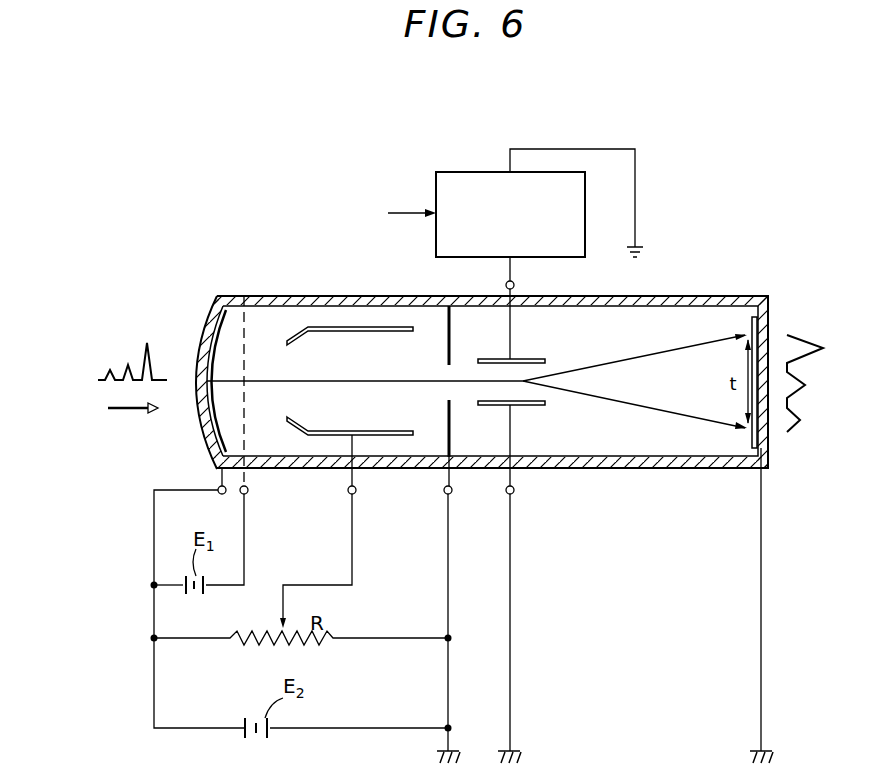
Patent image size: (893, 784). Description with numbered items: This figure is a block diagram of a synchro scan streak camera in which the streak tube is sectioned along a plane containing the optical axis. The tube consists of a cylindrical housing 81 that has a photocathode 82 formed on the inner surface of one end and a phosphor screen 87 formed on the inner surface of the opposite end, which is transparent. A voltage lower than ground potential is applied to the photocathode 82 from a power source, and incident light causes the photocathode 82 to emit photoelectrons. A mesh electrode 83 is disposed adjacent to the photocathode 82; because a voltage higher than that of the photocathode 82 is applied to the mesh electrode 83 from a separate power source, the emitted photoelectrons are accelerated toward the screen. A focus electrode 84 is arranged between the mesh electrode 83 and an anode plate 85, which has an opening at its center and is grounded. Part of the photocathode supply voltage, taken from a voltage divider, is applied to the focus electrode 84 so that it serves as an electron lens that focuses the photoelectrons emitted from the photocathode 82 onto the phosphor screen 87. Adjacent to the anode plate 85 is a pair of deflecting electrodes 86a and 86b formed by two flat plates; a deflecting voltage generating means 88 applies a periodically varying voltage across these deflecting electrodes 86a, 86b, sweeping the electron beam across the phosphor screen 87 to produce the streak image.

The cylindrical housing 81 is at (322, 296).
The photocathode 82 is at (207, 355).
The mesh electrode 83 is at (248, 340).
The focus electrode 84 is at (372, 327).
The anode plate 85 is at (447, 343).
The deflecting electrode 86a is at (488, 359).
The deflecting electrode 86b is at (540, 407).
The phosphor screen 87 is at (752, 326).
The deflecting voltage generating means 88 is at (586, 206).